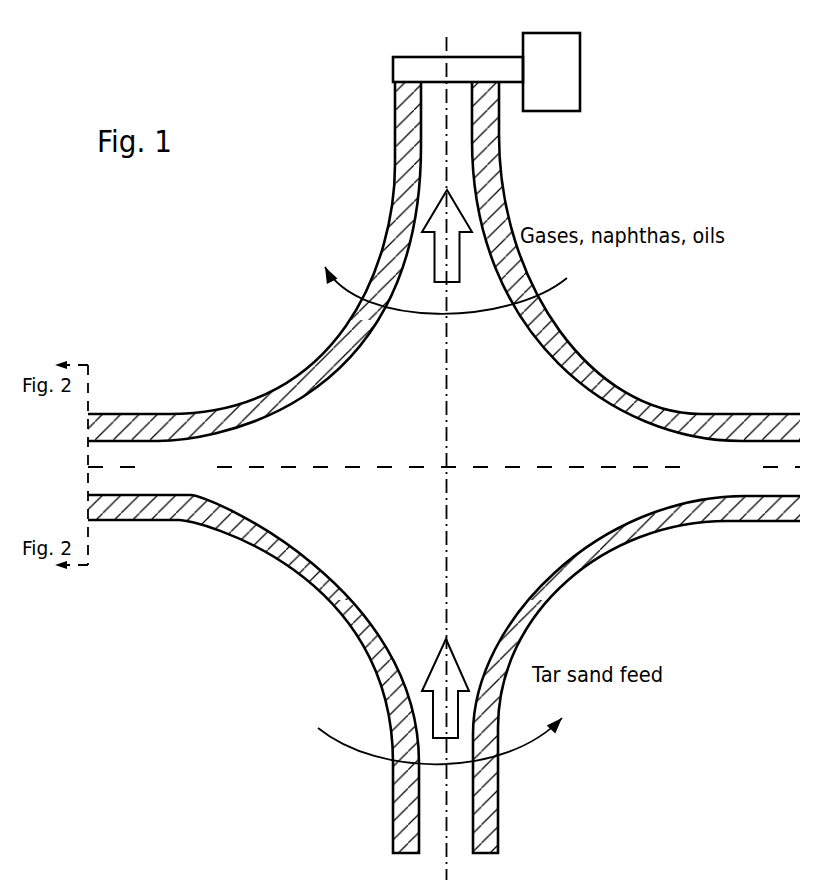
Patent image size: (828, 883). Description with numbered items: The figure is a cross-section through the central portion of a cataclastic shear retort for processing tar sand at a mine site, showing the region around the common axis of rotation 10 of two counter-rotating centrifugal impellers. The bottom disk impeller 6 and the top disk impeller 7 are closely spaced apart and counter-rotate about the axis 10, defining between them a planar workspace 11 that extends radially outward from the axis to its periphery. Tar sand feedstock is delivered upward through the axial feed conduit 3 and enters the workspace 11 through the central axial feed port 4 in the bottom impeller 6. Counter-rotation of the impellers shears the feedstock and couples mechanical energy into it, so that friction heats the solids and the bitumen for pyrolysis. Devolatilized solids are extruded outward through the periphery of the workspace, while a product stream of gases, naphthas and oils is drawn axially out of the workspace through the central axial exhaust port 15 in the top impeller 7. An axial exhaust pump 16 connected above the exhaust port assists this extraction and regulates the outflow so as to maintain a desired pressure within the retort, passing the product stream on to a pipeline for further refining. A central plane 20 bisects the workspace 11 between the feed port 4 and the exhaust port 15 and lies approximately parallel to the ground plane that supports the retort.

The axial feed conduit 3 is at (440, 771).
The axial feed port 4 is at (445, 668).
The bottom disk impeller 6 is at (307, 583).
The top disk impeller 7 is at (322, 340).
The common axis of rotation of the counter-rotating impellers 10 is at (447, 444).
The workspace between the impellers 11 is at (481, 467).
The axial exhaust port 15 is at (447, 272).
The axial exhaust pump 16 is at (551, 72).
The central plane of workspace 20 is at (285, 467).